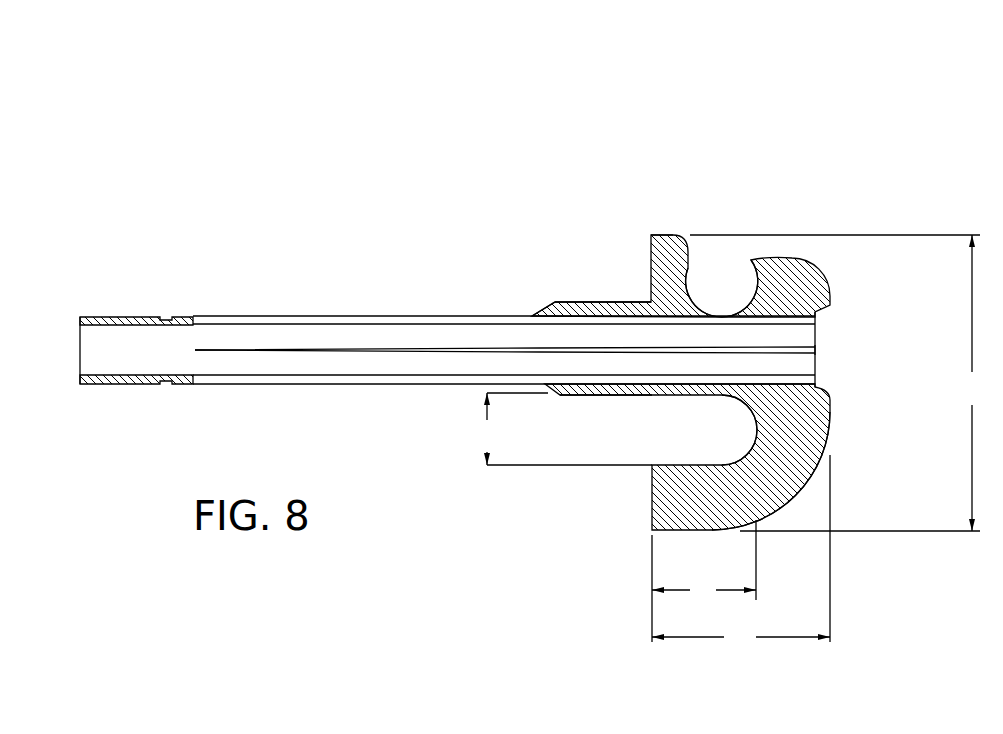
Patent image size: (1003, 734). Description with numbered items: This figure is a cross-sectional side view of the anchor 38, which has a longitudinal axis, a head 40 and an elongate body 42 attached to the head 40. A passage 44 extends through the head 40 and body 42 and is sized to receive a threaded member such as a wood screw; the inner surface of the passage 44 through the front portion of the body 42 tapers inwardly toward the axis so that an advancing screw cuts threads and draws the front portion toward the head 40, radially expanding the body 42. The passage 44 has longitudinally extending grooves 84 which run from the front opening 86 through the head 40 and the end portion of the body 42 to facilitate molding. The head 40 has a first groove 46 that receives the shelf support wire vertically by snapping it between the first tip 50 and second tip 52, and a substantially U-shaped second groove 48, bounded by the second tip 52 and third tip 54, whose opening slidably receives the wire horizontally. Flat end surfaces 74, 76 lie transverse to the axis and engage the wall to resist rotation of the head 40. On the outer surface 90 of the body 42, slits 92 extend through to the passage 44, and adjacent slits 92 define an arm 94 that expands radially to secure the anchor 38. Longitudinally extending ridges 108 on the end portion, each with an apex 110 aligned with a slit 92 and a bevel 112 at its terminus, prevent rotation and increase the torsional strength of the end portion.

The anchor 38 is at (896, 122).
The head 40 is at (856, 217).
The elongate body 42 is at (203, 267).
The passage 44 is at (113, 374).
The first groove 46 is at (700, 316).
The second groove 48 is at (776, 437).
The first tip 50 is at (665, 236).
The second tip 52 is at (792, 272).
The third tip 54 is at (790, 478).
The flat end surface 74 is at (651, 290).
The flat end surface 76 is at (652, 490).
The longitudinally extending groove 84 is at (825, 322).
The front opening 86 is at (832, 360).
The outer surface 90 is at (263, 316).
The slit 92 is at (297, 348).
The arm 94 is at (362, 316).
The longitudinally extending ridge 108 is at (560, 302).
The apex 110 is at (597, 302).
The bevel 112 is at (540, 311).